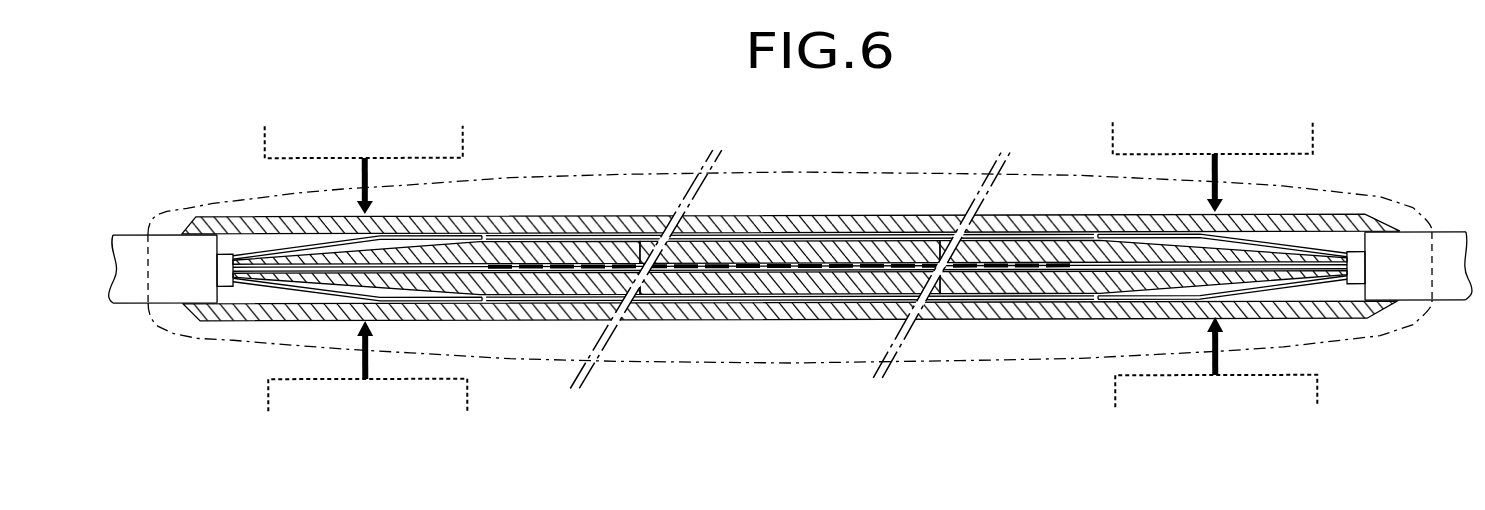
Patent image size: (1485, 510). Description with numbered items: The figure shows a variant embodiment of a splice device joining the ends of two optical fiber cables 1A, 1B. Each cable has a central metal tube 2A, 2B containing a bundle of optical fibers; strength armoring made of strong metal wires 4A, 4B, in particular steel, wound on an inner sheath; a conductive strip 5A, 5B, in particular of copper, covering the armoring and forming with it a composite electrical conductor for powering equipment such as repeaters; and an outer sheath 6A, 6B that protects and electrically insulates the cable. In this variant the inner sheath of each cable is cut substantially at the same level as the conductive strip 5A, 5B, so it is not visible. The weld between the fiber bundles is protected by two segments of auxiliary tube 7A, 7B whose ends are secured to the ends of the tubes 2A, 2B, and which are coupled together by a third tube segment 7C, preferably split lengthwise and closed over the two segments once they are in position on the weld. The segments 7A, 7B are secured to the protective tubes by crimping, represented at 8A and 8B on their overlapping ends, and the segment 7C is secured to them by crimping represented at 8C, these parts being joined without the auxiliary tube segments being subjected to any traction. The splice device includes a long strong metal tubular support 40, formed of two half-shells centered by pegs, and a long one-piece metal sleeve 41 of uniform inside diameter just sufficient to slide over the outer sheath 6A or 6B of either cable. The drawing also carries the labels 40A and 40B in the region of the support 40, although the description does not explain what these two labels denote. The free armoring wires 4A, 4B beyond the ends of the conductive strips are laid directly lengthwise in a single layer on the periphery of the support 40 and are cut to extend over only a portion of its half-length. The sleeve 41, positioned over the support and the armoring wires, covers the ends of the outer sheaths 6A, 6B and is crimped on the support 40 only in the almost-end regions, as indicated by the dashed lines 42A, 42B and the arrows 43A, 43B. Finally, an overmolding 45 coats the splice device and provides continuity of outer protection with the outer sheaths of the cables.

The cable 1A is at (128, 229).
The cable 1B is at (1446, 229).
The central metal tube 2A is at (412, 267).
The central metal tube 2B is at (1242, 267).
The armoring wires 4A is at (476, 234).
The armoring wires 4B is at (1107, 236).
The conductive strip 5A is at (224, 258).
The conductive strip 5B is at (1360, 257).
The outer sheath 6A is at (132, 287).
The outer sheath 6B is at (1445, 283).
The auxiliary tube segment 7A is at (533, 257).
The auxiliary tube segment 7B is at (1044, 258).
The third tube segment 7C is at (778, 258).
The crimping 8A is at (565, 278).
The crimping 8B is at (1020, 273).
The crimping 8C is at (803, 273).
The tubular support 40 is at (714, 226).
The splice protection core 40A is at (800, 268).
The adhesive layer 40B is at (843, 280).
The sleeve 41 is at (613, 216).
The dashed lines 42A is at (345, 157).
The dashed lines 42B is at (1153, 155).
The arrows 43A is at (363, 174).
The arrows 43B is at (1212, 175).
The overmolding 45 is at (645, 362).